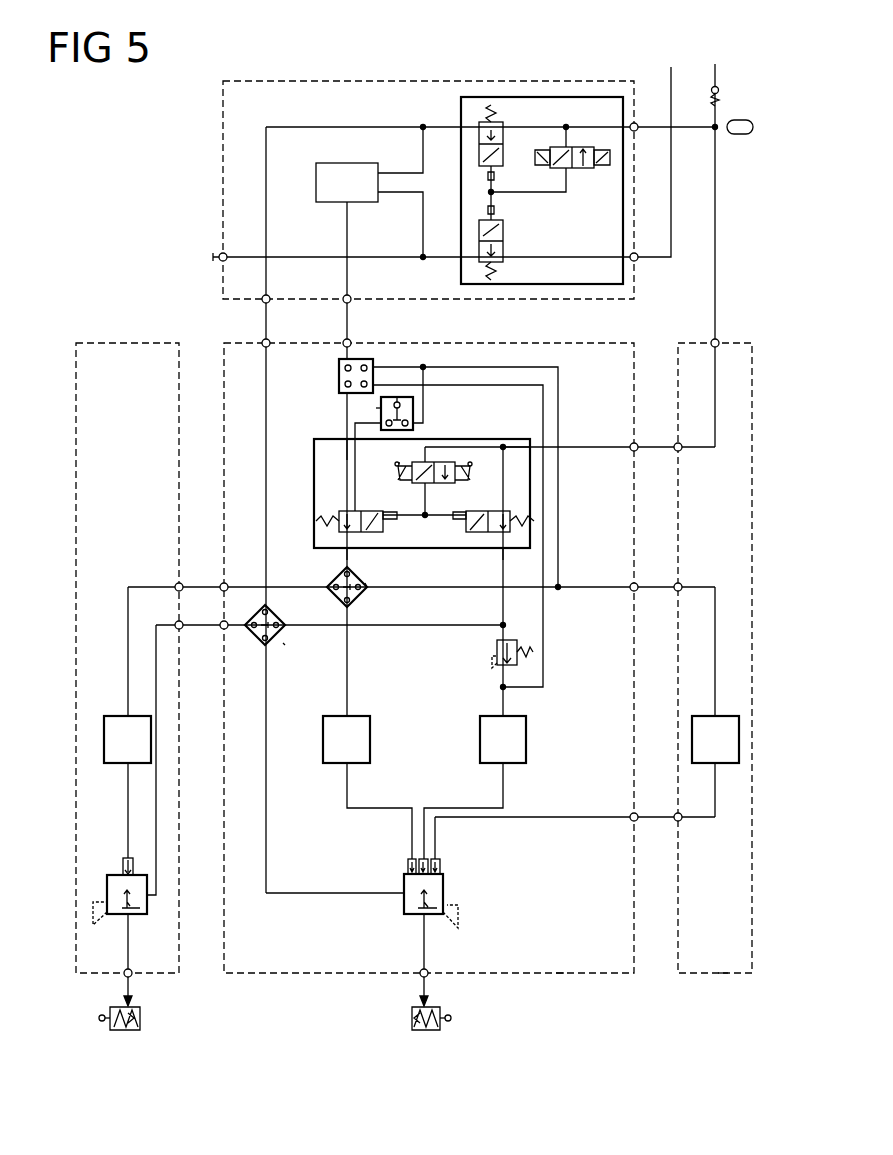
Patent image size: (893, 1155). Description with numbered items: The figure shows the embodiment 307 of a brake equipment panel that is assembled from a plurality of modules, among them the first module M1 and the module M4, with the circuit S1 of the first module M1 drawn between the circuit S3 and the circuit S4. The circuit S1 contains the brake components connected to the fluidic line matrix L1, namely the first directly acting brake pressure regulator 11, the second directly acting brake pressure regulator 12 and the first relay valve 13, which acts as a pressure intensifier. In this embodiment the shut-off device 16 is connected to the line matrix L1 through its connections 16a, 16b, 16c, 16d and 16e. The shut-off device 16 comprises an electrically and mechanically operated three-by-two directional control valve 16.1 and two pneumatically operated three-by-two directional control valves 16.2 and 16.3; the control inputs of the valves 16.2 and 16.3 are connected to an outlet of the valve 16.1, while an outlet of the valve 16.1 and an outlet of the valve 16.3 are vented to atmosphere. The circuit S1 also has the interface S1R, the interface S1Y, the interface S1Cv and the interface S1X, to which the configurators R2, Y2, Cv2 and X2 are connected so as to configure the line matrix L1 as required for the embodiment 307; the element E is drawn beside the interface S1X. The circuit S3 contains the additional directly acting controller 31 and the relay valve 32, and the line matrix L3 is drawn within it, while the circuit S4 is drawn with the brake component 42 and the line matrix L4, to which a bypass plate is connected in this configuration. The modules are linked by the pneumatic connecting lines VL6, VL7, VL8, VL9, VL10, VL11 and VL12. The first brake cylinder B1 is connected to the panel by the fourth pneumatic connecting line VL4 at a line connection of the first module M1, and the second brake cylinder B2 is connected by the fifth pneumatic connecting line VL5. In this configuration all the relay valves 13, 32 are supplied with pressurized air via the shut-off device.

The brake equipment panel embodiment 307 is at (140, 207).
The connecting line VL6 is at (347, 305).
The configurator Y2 is at (362, 357).
The connecting line VL7 is at (266, 328).
The pressure sensor / input E is at (397, 394).
The interface S1X is at (432, 410).
The interface S1Y is at (334, 369).
The configurator X2 is at (378, 408).
The connection 16a is at (350, 441).
The shut-off device 16 is at (313, 481).
The pneumatically operated 3/2 directional control valve 16.2 is at (313, 516).
The electrically and mechanically operated 3/2 directional control valve 16.1 is at (452, 458).
The connection 16d is at (530, 447).
The connection 16e is at (379, 474).
The pneumatically operated 3/2 directional control valve 16.3 is at (530, 514).
The connecting line VL12 is at (634, 447).
The circuit S3 is at (134, 563).
The connecting line VL8 is at (195, 587).
The connection 16b is at (347, 553).
The interface S1Cv is at (375, 578).
The connecting line VL11 is at (634, 587).
The line matrix L4 is at (700, 587).
The line L3 is at (127, 653).
The connecting line VL9 is at (198, 625).
The configurator R2 is at (283, 638).
The configurator Cv2 is at (357, 604).
The connection 16c is at (500, 553).
The interface S1R is at (287, 648).
The additional directly acting controller 31 is at (104, 743).
The second directly acting brake pressure regulator 12 is at (370, 742).
The first directly acting brake pressure regulator 11 is at (526, 742).
The component 42 is at (692, 727).
The connecting line VL10 is at (634, 817).
The relay valve 32 is at (107, 881).
The first relay valve 13 is at (443, 880).
The circuit S1 is at (558, 867).
The subsystem S4 is at (705, 867).
The fifth pneumatic connecting line VL5 is at (128, 985).
The second brake cylinder B2 is at (140, 1018).
The fluidic line matrix L1 is at (297, 895).
The first brake cylinder B1 is at (412, 1018).
The fourth pneumatic connecting line VL4 is at (424, 985).
The first module M1 is at (560, 975).
The module M4 is at (723, 975).